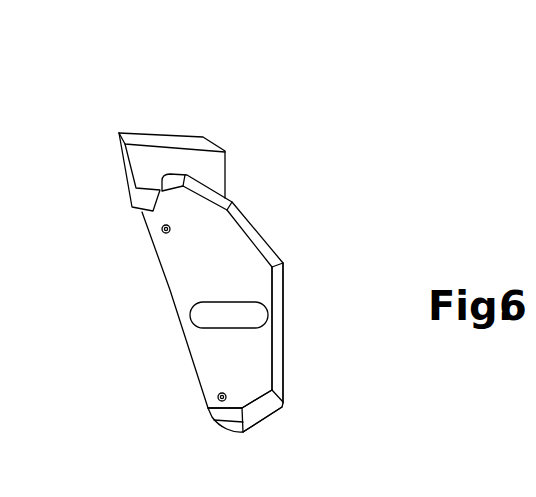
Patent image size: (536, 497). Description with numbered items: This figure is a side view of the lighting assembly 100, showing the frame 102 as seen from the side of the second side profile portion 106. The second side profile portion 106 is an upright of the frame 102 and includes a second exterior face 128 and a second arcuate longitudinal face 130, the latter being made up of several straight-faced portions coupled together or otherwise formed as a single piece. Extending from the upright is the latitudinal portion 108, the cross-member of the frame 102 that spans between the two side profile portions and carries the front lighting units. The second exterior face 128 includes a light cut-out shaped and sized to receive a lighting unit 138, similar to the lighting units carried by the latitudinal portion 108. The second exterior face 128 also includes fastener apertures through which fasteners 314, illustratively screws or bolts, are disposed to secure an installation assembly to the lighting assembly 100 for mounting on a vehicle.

The lighting assembly 100 is at (249, 253).
The frame 102 is at (224, 245).
The second side profile portion 106 is at (237, 365).
The latitudinal portion 108 is at (147, 137).
The second exterior face 128 is at (198, 272).
The second arcuate longitudinal face 130 is at (285, 345).
The lighting unit 138 is at (215, 318).
The fastener 314 is at (169, 226).